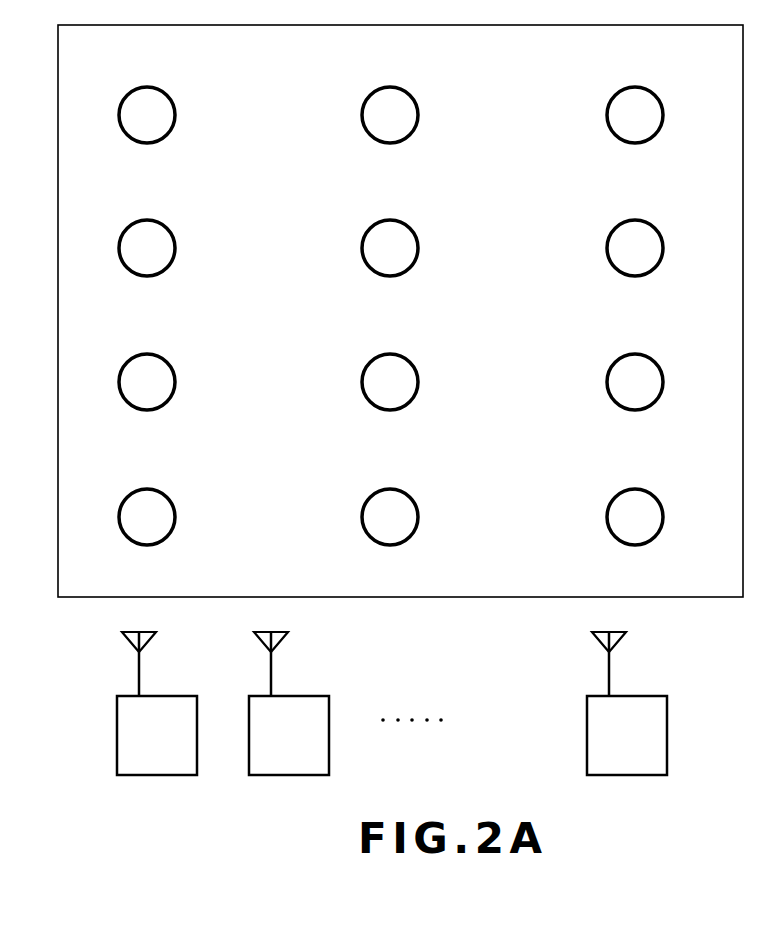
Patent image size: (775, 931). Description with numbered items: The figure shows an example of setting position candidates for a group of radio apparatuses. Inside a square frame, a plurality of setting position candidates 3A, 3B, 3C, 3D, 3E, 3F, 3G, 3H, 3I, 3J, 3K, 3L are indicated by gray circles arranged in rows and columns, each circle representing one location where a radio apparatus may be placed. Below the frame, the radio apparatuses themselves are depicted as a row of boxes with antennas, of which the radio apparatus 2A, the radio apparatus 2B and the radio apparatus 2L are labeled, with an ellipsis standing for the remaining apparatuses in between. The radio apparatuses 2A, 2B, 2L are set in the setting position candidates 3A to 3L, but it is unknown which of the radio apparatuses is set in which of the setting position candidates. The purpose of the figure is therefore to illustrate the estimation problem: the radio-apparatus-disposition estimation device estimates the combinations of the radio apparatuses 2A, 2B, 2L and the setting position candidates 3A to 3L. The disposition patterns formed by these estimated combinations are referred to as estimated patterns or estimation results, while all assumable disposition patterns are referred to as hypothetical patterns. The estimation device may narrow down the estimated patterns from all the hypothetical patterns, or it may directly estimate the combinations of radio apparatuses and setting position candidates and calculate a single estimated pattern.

The setting position candidate 3A is at (174, 106).
The setting position candidate 3B is at (417, 106).
The setting position candidate 3C is at (662, 106).
The setting position candidate 3D is at (174, 239).
The setting position candidate 3E is at (417, 239).
The setting position candidate 3F is at (662, 239).
The setting position candidate 3G is at (174, 373).
The setting position candidate 3H is at (417, 373).
The setting position candidate 3I is at (662, 373).
The setting position candidate 3J is at (174, 508).
The setting position candidate 3K is at (417, 508).
The setting position candidate 3L is at (662, 508).
The radio apparatus 2A is at (167, 696).
The radio apparatus 2B is at (299, 696).
The radio apparatus 2L is at (637, 696).